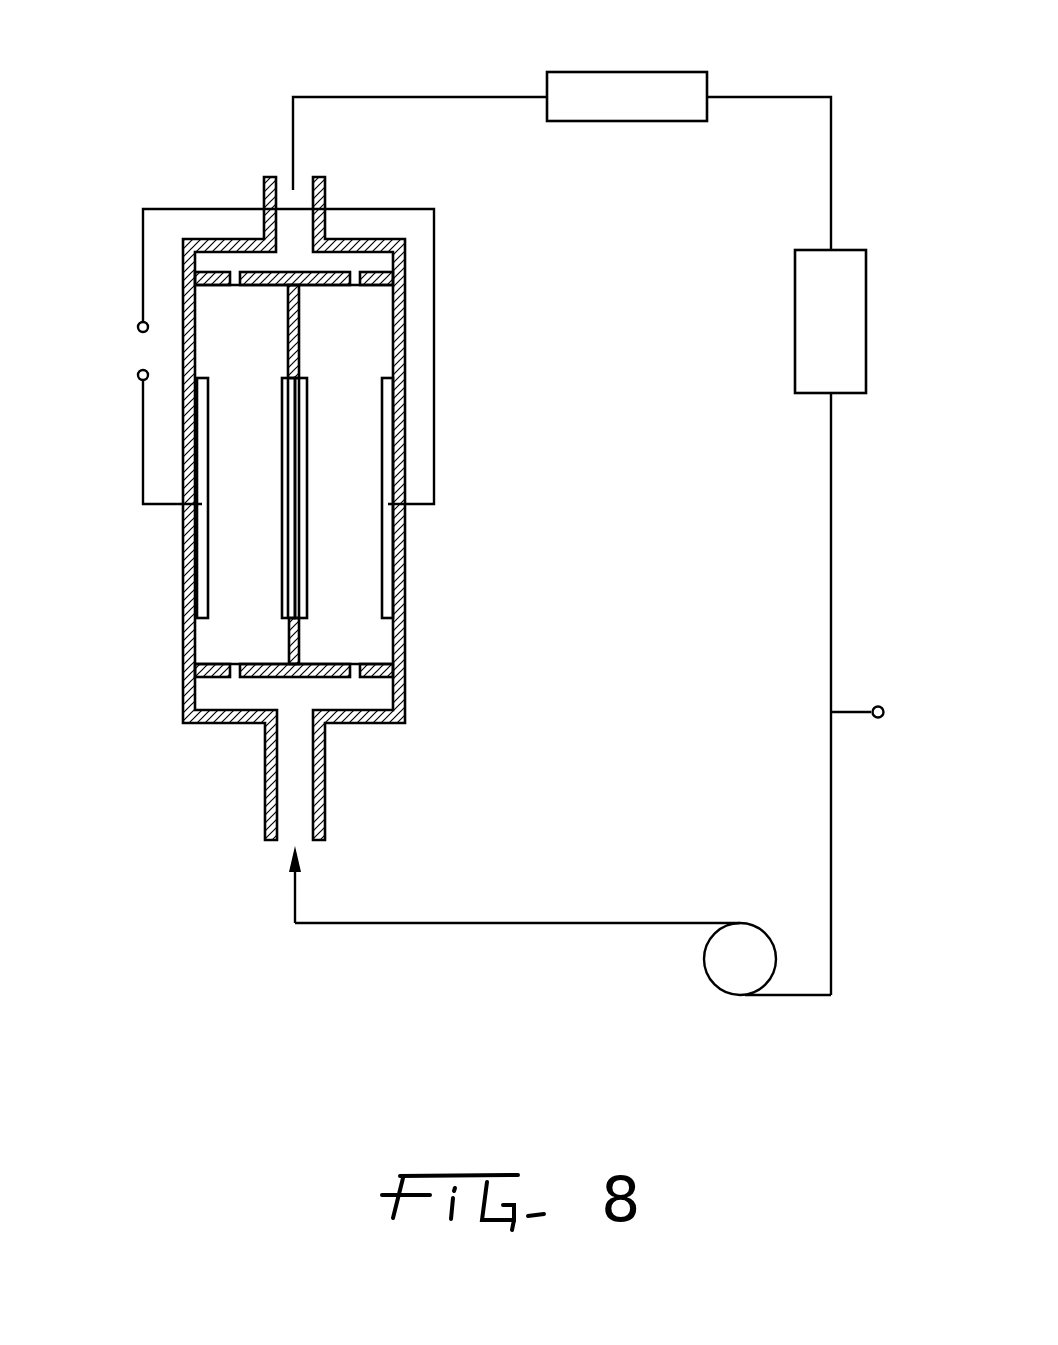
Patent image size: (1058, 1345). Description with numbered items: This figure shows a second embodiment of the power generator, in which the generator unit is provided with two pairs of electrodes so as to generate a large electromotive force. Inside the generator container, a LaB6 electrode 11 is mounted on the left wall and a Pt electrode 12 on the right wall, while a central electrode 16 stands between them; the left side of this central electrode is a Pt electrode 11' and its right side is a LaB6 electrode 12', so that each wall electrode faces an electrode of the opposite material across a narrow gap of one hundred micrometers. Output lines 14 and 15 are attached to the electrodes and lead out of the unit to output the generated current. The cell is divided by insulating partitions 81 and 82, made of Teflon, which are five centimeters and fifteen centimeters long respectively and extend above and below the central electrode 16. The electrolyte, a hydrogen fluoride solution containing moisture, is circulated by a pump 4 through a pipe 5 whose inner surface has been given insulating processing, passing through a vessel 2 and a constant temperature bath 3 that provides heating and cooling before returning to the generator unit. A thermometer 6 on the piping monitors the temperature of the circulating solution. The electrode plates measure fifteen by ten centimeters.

The vessel 2 is at (641, 78).
The constant temperature bath 3 is at (858, 307).
The pump 4 is at (727, 973).
The pipe 5 is at (424, 97).
The thermometer 6 is at (876, 711).
The LaB6 electrode 11 is at (149, 501).
The Pt electrode 11' is at (187, 532).
The Pt electrode 12 is at (452, 498).
The LaB6 electrode 12' is at (408, 535).
The output line 14 is at (435, 297).
The output line 15 is at (168, 506).
The electrode 16 is at (272, 474).
The insulating partition 81 is at (297, 338).
The insulating partition 82 is at (298, 640).